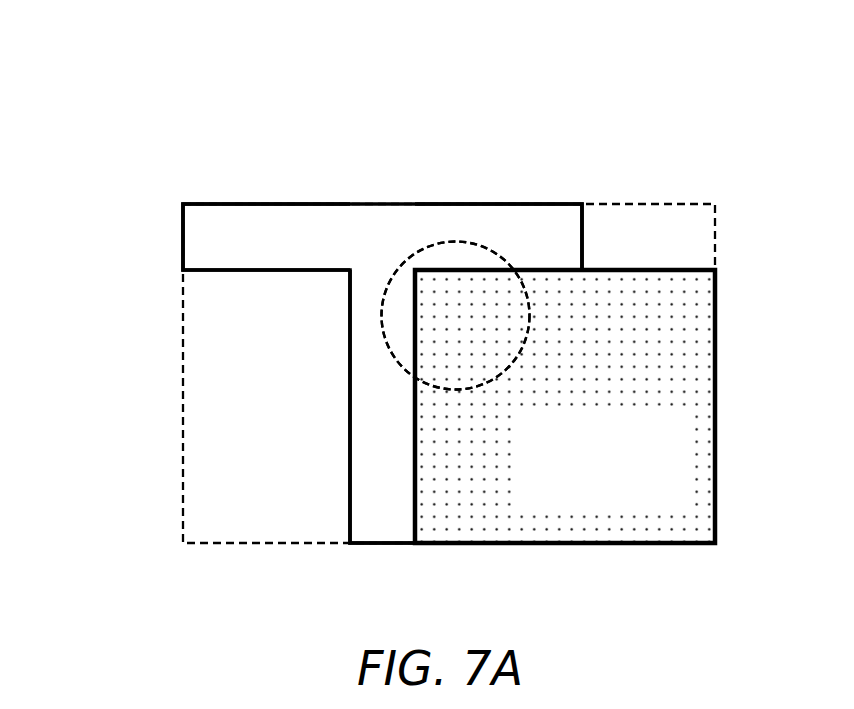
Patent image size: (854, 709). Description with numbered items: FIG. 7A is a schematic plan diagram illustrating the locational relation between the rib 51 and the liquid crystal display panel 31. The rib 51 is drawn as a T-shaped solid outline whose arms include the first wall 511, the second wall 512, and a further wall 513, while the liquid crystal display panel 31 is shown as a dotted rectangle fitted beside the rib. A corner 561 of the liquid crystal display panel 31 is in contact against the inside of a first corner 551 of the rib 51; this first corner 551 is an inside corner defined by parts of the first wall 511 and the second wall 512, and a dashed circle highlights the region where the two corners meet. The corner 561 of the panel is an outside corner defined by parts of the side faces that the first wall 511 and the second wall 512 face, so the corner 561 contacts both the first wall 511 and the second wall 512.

The liquid crystal display panel 31 is at (618, 501).
The rib 51 is at (350, 203).
The first wall 511 is at (383, 545).
The second wall 512 is at (583, 206).
The wall 513 is at (181, 240).
The first corner 551 is at (465, 245).
The corner 561 is at (531, 177).